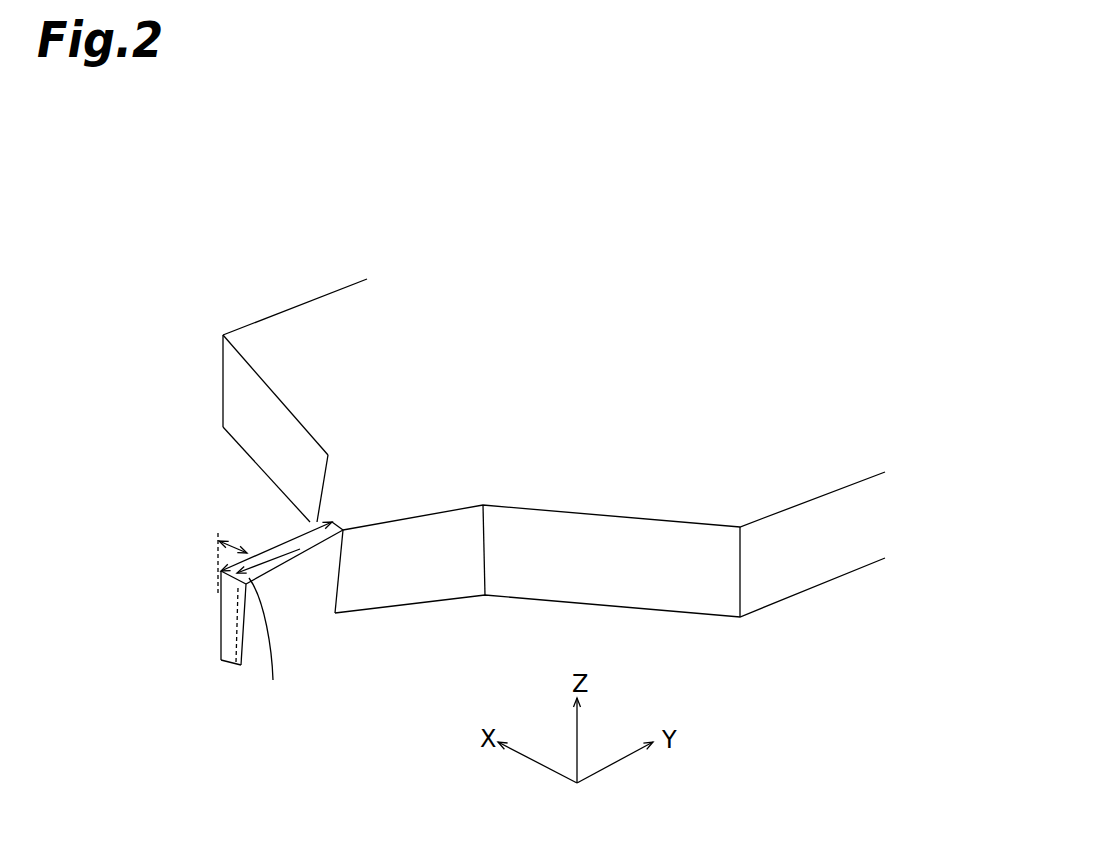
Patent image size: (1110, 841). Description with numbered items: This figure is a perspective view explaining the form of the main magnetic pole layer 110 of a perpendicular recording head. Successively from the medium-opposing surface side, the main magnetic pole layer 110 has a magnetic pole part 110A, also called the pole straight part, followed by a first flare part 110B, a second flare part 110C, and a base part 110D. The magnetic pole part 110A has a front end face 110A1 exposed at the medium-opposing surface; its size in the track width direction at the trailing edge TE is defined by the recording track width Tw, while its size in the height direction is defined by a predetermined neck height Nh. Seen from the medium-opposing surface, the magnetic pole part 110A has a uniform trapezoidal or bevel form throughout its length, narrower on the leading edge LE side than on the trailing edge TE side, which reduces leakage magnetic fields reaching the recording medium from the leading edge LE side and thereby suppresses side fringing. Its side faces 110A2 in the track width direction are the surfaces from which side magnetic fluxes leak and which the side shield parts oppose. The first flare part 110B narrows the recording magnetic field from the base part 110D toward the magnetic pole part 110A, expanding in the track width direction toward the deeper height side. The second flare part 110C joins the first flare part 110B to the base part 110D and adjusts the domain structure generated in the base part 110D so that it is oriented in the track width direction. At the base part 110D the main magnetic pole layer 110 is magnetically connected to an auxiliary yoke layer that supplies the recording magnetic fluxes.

The main magnetic pole layer 110 is at (167, 236).
The magnetic pole part 110A is at (283, 540).
The front end face 110A1 is at (236, 637).
The side faces 110A2 is at (220, 630).
The first flare part 110B is at (333, 490).
The second flare part 110C is at (277, 372).
The base part 110D is at (385, 317).
The neck height Nh is at (293, 553).
The recording track width Tw is at (232, 542).
The trailing edge TE is at (219, 571).
The leading edge LE is at (233, 666).